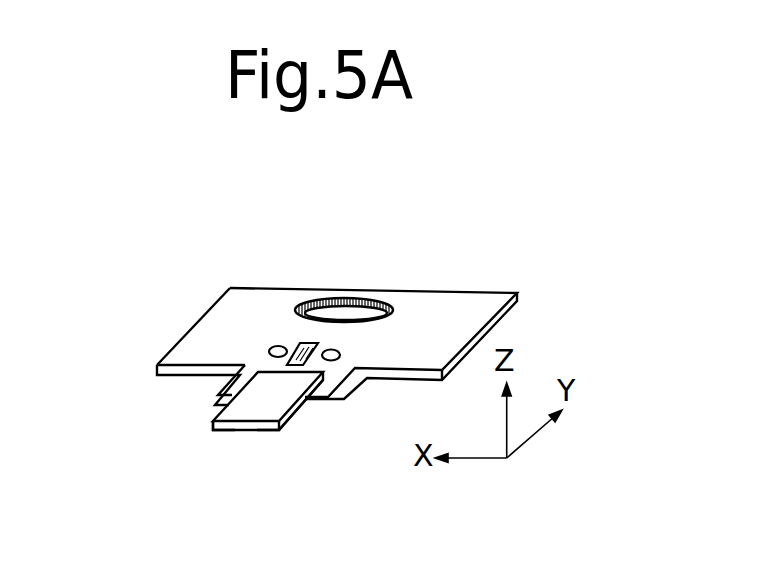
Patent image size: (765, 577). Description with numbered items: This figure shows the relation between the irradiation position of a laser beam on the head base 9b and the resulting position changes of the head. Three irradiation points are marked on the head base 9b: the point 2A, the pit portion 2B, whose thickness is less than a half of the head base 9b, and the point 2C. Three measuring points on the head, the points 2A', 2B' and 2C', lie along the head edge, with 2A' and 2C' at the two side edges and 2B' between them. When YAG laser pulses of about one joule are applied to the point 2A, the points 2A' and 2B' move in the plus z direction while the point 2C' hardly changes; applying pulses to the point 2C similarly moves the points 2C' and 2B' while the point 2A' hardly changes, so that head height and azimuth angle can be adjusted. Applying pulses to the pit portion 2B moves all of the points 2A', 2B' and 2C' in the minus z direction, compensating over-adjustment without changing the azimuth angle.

The head base 9b is at (217, 326).
The laser irradiation point 2A is at (247, 274).
The pit portion 2B is at (309, 268).
The laser irradiation point 2C is at (363, 273).
The head side edge point 2A' is at (171, 458).
The head center point 2B' is at (260, 441).
The head side edge point 2C' is at (298, 439).